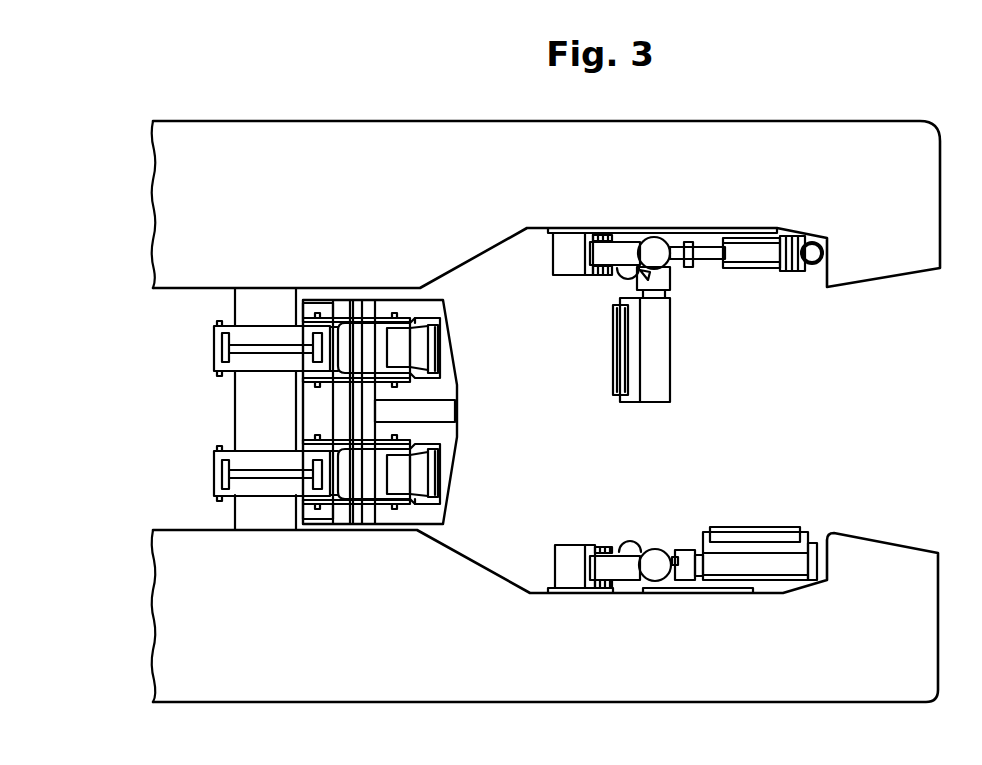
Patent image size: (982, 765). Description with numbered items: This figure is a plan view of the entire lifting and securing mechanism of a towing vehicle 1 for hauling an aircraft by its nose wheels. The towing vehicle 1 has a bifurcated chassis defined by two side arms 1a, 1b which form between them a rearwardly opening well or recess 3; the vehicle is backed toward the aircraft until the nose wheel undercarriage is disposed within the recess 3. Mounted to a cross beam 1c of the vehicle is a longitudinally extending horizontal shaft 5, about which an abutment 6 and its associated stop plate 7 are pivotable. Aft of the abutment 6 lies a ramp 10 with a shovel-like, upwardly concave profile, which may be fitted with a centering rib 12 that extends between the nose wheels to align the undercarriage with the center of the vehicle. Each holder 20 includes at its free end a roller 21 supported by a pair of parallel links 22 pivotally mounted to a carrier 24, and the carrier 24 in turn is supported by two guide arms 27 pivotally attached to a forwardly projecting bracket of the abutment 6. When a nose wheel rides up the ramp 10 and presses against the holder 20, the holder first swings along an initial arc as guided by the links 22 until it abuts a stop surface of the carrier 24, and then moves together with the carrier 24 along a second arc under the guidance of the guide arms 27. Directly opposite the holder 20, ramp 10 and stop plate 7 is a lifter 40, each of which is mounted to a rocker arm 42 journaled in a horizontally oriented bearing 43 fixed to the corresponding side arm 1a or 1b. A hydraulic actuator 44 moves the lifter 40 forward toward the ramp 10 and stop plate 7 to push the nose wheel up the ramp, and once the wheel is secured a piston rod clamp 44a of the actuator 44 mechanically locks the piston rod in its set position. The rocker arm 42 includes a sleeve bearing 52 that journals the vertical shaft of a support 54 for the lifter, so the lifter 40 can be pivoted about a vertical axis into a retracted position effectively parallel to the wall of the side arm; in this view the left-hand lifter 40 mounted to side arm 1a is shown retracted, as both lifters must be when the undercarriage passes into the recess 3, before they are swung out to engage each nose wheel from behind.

The towing vehicle 1 is at (714, 113).
The side arm 1a is at (546, 686).
The side arm 1b is at (492, 133).
The cross beam 1c is at (243, 399).
The recess 3 is at (895, 437).
The shaft 5 is at (298, 420).
The abutment 6 is at (347, 512).
The stop plate 7 is at (368, 512).
The ramp 10 is at (447, 368).
The centering rib 12 is at (447, 412).
The holder 20 is at (432, 318).
The roller 21 is at (440, 338).
The parallel links 22 is at (357, 330).
The carrier 24 is at (337, 330).
The guide arms 27 is at (257, 330).
The lifter 40 is at (660, 340).
The rocker arm 42 is at (622, 245).
The bearing 43 is at (583, 268).
The hydraulic actuator 44 is at (803, 265).
The piston rod clamp 44a is at (742, 262).
The sleeve bearing 52 is at (658, 248).
The support 54 is at (665, 285).